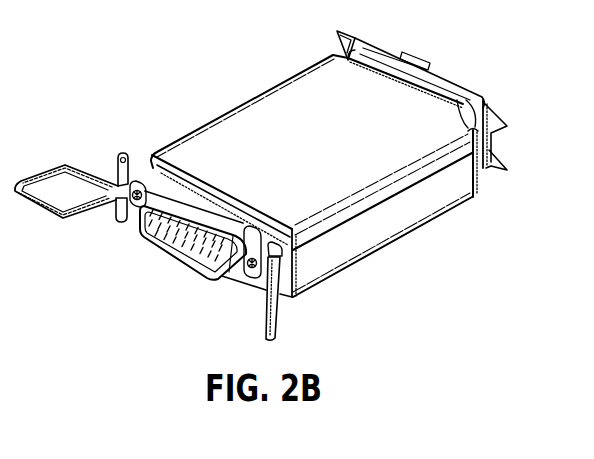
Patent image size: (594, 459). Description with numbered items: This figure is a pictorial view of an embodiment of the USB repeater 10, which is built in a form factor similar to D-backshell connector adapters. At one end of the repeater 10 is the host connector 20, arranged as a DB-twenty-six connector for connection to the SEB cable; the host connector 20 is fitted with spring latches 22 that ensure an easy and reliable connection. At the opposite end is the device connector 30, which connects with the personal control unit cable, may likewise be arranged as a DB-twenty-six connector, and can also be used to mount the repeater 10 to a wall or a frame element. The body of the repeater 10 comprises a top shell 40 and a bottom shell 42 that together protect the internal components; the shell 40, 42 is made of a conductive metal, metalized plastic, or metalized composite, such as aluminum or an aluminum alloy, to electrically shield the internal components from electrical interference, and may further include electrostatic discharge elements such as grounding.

The USB repeater 10 is at (145, 72).
The host connector 20 is at (159, 246).
The spring latches 22 is at (94, 212).
The device connector 30 is at (427, 79).
The top shell 40 is at (442, 162).
The bottom shell 42 is at (395, 218).